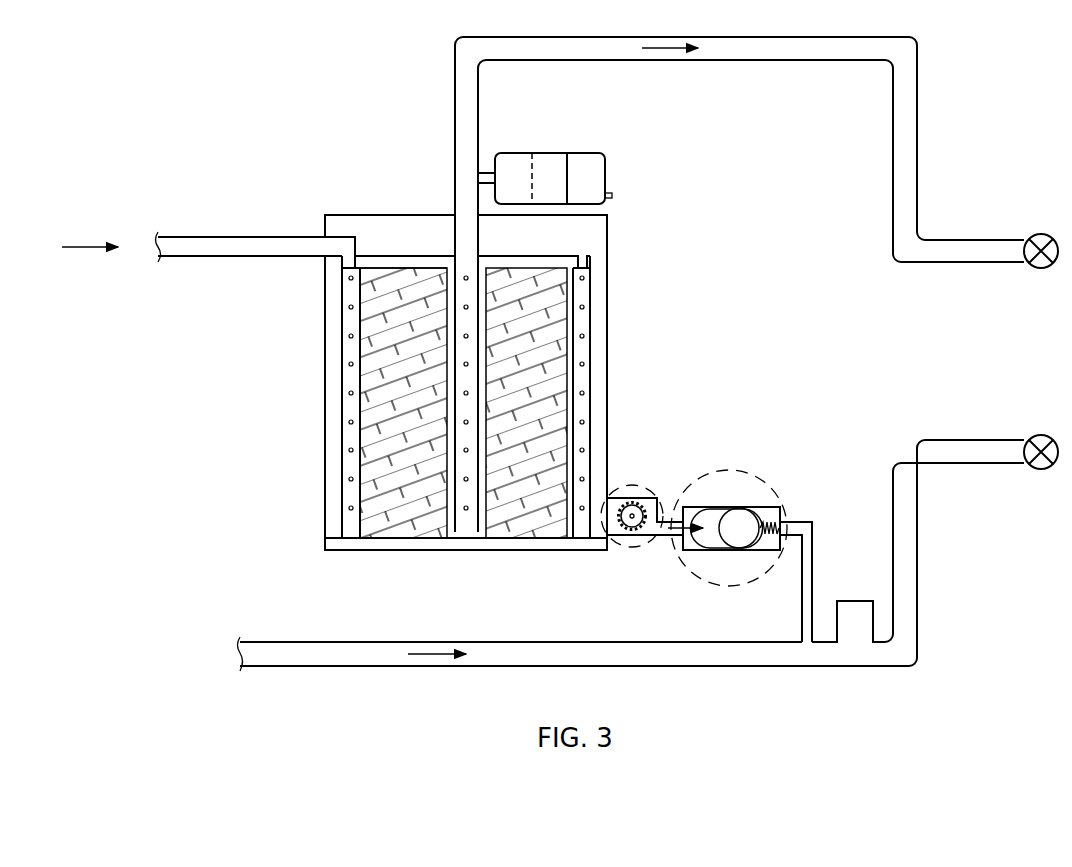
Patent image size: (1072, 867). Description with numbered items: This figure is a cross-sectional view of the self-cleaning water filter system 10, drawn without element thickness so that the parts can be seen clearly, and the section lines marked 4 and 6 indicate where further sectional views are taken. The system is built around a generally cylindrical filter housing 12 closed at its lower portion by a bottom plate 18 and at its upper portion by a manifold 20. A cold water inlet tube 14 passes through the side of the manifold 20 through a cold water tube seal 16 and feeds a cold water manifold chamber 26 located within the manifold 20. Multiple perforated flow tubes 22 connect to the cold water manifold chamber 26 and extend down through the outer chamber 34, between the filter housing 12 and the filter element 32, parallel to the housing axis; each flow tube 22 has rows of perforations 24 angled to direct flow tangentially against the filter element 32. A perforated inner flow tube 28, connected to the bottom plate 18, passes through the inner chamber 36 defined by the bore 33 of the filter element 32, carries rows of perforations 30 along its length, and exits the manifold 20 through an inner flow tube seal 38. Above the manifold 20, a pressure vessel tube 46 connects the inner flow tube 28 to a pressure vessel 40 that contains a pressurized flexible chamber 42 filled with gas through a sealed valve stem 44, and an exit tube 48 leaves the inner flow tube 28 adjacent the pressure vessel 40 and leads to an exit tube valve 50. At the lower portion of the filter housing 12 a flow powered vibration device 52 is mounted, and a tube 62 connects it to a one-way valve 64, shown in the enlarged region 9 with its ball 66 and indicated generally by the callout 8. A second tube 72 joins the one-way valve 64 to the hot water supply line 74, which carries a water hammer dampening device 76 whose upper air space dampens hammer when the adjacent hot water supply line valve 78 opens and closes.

The section line 4- 4 is at (225, 243).
The section line 6- 6 is at (305, 423).
The pump drive 8 is at (650, 537).
The pump assembly 9 is at (747, 473).
The self-cleaning water filter system 10 is at (196, 86).
The filter housing 12 is at (609, 355).
The cold water inlet tube 14 is at (207, 237).
The cold water tube seal 16 is at (325, 235).
The bottom plate 18 is at (337, 550).
The manifold 20 is at (609, 225).
The perforated flow tubes 22 is at (343, 422).
The perforations 24 is at (350, 393).
The cold water manifold chamber 26 is at (325, 262).
The inner flow tube 28 is at (462, 514).
The perforations 30 is at (470, 514).
The filter element 32 is at (380, 330).
The bore 33 is at (447, 272).
The outer chamber 34 is at (335, 357).
The inner chamber 36 is at (452, 530).
The inner flow tube seal 38 is at (455, 215).
The pressure vessel 40 is at (548, 155).
The flexible chamber 42 is at (585, 175).
The sealed valve stem 44 is at (612, 196).
The pressure vessel tube 46 is at (488, 165).
The exit tube 48 is at (787, 60).
The exit tube valve 50 is at (1040, 234).
The flow powered vibration device 52 is at (630, 530).
The tube 62 is at (670, 524).
The one-way valve 64 is at (728, 507).
The ball 66 is at (742, 528).
The second tube 72 is at (802, 620).
The hot water supply line 74 is at (318, 666).
The water hammer dampening device 76 is at (855, 601).
The hot water supply line valve 78 is at (1040, 470).